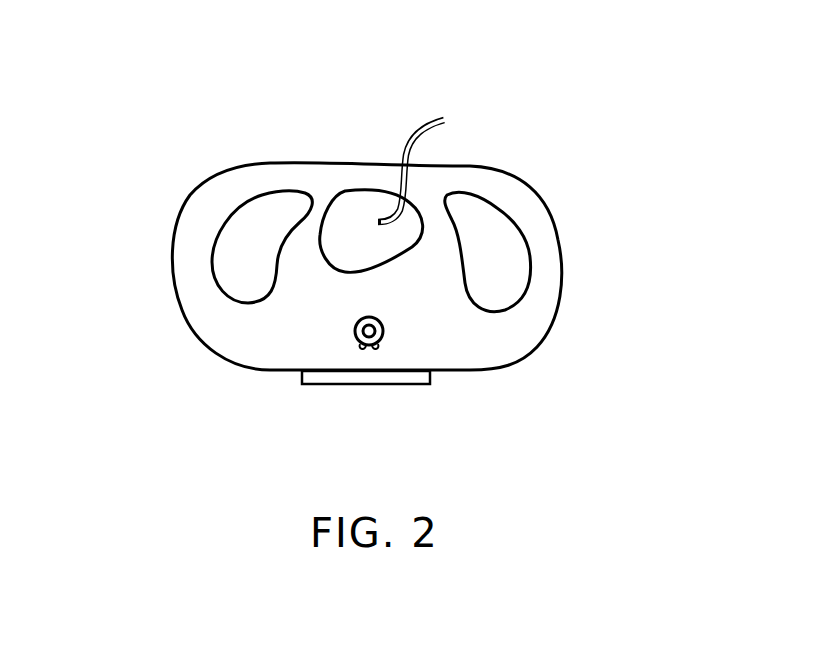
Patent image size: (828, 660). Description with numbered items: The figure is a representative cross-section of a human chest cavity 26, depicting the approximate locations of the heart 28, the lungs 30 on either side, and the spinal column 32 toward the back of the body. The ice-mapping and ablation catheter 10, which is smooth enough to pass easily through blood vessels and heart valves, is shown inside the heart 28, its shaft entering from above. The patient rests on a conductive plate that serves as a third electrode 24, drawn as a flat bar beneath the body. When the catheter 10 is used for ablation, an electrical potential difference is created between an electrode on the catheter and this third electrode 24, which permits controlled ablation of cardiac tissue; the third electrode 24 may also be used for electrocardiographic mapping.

The ice-mapping and ablation catheter 10 is at (420, 125).
The third electrode 24 is at (357, 385).
The chest cavity 26 is at (228, 198).
The heart 28 is at (357, 208).
The lungs 30 is at (233, 245).
The spinal column 32 is at (353, 333).